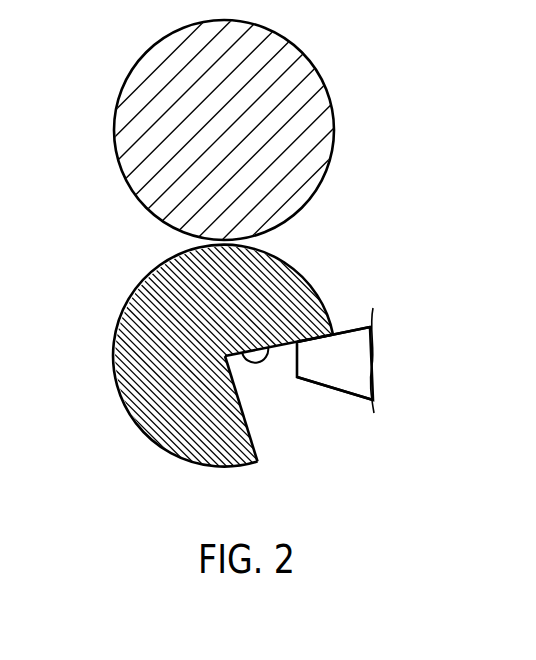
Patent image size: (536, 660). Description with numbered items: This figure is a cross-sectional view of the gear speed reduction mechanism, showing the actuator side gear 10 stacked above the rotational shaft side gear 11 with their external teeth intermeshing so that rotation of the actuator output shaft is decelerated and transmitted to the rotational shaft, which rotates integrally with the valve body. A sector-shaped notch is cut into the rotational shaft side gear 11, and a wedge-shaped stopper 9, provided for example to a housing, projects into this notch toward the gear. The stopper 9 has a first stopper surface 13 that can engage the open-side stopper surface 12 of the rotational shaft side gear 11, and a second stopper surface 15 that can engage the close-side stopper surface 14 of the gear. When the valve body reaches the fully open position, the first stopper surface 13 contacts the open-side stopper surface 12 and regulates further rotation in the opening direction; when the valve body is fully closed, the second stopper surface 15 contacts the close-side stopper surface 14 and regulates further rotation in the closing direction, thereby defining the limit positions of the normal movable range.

The stopper 9 is at (355, 362).
The actuator side gear 10 is at (320, 123).
The rotational shaft side gear 11 is at (158, 426).
The open-side stopper surface 12 is at (264, 349).
The first stopper surface 13 is at (347, 331).
The close-side stopper surface 14 is at (255, 433).
The second stopper surface 15 is at (339, 391).